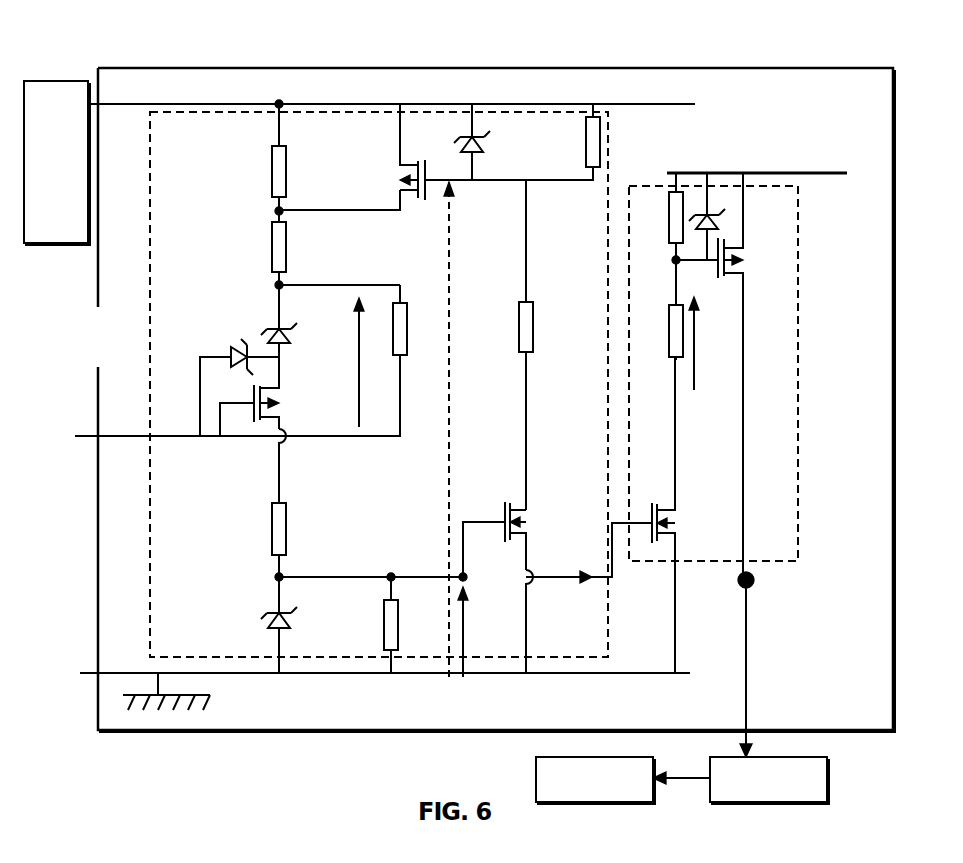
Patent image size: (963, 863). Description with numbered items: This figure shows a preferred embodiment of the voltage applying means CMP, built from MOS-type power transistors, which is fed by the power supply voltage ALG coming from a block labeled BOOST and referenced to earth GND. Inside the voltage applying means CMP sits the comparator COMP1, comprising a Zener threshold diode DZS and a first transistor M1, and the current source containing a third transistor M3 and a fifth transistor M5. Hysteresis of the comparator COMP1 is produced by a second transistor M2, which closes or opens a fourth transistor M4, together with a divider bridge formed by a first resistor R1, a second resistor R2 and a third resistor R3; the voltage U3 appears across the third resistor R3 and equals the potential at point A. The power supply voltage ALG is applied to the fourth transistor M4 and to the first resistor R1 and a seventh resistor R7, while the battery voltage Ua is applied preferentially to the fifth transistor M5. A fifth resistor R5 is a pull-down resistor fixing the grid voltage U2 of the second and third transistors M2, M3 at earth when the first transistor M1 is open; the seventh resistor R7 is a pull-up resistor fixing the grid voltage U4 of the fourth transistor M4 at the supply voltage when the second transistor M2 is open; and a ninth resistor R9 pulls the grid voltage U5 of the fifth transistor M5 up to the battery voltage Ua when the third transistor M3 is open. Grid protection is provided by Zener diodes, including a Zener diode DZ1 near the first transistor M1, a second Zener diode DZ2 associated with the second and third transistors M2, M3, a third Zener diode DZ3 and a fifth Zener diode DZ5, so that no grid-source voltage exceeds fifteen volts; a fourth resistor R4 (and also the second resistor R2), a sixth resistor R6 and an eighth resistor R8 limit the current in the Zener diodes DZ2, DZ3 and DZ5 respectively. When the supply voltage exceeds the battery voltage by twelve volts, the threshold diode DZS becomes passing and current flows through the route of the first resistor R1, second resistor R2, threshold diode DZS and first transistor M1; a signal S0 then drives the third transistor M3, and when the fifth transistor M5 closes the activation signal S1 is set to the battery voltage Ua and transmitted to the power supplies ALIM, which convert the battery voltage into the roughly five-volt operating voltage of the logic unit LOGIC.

The voltage applying means CMP is at (133, 70).
The boost circuit BOOST is at (56, 162).
The power supply voltage ALG is at (391, 94).
The comparator COMP1 is at (150, 317).
The ground GND is at (385, 692).
The battery voltage Ua is at (461, 286).
The first resistor R1 is at (254, 157).
The second resistor R2 is at (254, 250).
The third resistor R3 is at (421, 360).
The fourth resistor R4 is at (259, 542).
The fifth resistor R5 is at (373, 623).
The sixth resistor R6 is at (549, 345).
The seventh resistor R7 is at (587, 142).
The eighth resistor R8 is at (658, 308).
The ninth resistor R9 is at (658, 216).
The point A is at (282, 284).
The grid voltage of the second and third transistors U2 is at (486, 632).
The voltage across the third resistor U3 is at (344, 362).
The grid voltage of the fourth transistor U4 is at (468, 429).
The grid voltage of the fifth transistor U5 is at (711, 343).
The Zener threshold diode DZS is at (255, 321).
The zener diode DZ1 is at (221, 387).
The second Zener diode DZ2 is at (252, 625).
The third Zener diode DZ3 is at (497, 142).
The fifth Zener diode DZ5 is at (738, 216).
The first transistor M1 is at (281, 430).
The second transistor M2 is at (498, 573).
The third transistor M3 is at (655, 515).
The fourth transistor M4 is at (375, 157).
The fifth transistor M5 is at (736, 376).
The signal S0 is at (589, 553).
The activation signal S1 is at (771, 664).
The power supplies ALIM is at (740, 780).
The logic unit LOGIC is at (595, 780).